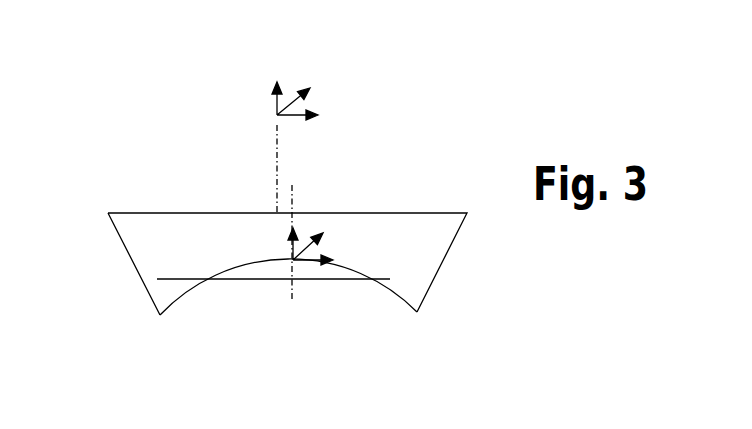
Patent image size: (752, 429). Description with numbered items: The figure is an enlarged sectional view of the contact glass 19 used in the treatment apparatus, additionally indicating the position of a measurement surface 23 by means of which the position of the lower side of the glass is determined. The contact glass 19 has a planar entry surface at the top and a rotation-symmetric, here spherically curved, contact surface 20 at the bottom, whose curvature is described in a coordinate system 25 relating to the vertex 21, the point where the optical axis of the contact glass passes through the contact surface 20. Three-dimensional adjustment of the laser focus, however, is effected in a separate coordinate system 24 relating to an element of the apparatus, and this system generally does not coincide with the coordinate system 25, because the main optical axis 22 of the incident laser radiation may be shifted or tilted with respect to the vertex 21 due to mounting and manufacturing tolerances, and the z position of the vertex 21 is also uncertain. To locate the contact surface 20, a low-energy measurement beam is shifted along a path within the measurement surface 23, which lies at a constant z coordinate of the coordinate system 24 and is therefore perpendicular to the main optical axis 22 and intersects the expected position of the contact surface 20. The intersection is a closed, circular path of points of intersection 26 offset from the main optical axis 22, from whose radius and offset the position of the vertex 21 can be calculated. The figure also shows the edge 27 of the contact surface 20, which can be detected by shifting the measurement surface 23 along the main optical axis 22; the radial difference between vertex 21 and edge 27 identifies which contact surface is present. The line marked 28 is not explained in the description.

The contact glass 19 is at (112, 212).
The contact surface 20 is at (405, 297).
The vertex 21 is at (293, 262).
The main optical axis 22 is at (273, 202).
The measurement surface 23 is at (238, 283).
The coordinate system 24 is at (332, 76).
The coordinate system 25 is at (324, 212).
The points of intersection 26 is at (202, 284).
The edge 27 is at (160, 315).
The lens region 28 is at (258, 283).